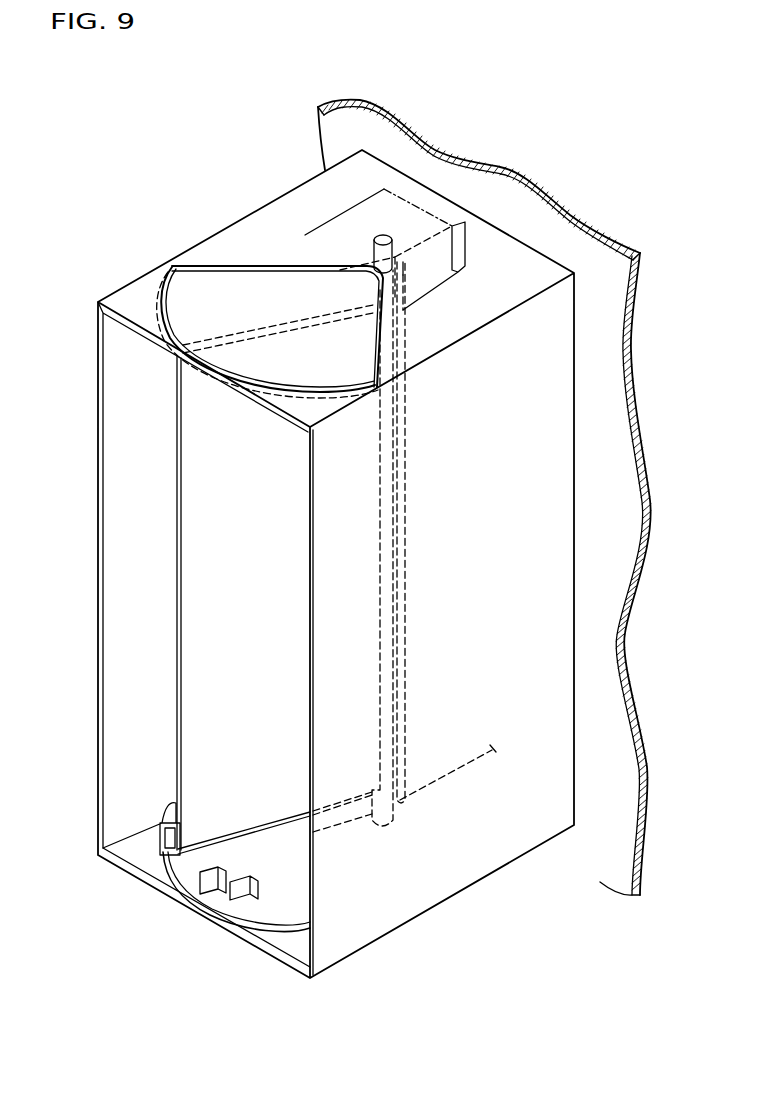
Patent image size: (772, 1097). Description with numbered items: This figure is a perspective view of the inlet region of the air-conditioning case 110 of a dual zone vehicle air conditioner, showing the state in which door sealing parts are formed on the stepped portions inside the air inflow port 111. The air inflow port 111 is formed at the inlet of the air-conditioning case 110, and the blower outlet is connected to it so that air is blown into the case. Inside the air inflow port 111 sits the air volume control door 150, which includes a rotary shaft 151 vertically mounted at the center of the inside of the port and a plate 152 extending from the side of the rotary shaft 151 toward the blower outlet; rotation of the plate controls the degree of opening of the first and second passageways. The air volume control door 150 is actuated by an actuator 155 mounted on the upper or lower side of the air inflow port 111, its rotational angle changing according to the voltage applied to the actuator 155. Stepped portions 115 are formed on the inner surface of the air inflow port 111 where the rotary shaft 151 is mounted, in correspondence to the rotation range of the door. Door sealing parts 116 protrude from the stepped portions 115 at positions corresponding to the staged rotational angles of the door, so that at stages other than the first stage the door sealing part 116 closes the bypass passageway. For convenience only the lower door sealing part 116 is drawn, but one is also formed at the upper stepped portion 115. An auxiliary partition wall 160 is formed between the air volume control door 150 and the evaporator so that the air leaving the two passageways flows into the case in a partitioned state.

The air-conditioning case 110 is at (600, 313).
The air inflow port 111 is at (350, 963).
The stepped portion 115 is at (378, 365).
The door sealing part 116 is at (183, 862).
The air volume control door 150 is at (139, 138).
The rotary shaft 151 is at (340, 215).
The plate 152 is at (268, 330).
The actuator 155 is at (346, 207).
The auxiliary partition wall 160 is at (448, 775).